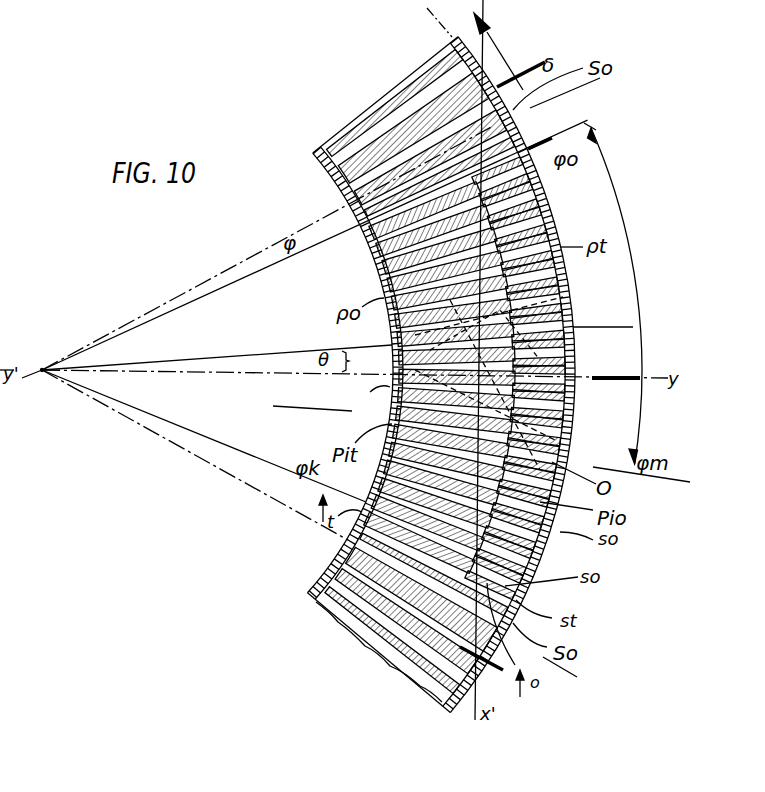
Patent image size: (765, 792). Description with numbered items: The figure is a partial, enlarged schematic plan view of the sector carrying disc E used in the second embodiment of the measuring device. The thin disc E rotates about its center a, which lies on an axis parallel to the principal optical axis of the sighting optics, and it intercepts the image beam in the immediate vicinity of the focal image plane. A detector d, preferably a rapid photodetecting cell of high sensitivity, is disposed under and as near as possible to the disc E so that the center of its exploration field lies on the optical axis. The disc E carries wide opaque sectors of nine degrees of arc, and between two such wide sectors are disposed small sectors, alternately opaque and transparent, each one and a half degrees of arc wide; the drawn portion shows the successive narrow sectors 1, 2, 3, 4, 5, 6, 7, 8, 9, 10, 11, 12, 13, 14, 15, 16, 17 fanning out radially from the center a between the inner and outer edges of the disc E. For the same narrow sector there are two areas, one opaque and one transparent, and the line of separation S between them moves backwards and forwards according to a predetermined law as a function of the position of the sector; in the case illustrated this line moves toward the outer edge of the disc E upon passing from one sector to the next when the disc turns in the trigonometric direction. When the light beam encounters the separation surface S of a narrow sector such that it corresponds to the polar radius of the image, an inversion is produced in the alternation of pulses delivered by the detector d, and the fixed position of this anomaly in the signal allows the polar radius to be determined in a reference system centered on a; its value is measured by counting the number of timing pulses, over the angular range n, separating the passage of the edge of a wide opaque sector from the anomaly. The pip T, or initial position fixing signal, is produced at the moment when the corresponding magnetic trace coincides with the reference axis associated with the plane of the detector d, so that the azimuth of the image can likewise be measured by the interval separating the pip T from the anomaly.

The narrow sector 1 is at (460, 198).
The narrow sector 2 is at (467, 220).
The narrow sector 3 is at (474, 242).
The narrow sector 4 is at (481, 264).
The narrow sector 5 is at (485, 286).
The narrow sector 6 is at (489, 308).
The narrow sector 7 is at (493, 331).
The narrow sector 8 is at (493, 355).
The narrow sector 9 is at (494, 377).
The narrow sector 10 is at (498, 400).
The narrow sector 11 is at (496, 423).
The narrow sector 12 is at (492, 446).
The narrow sector 13 is at (487, 469).
The narrow sector 14 is at (481, 492).
The narrow sector 15 is at (474, 513).
The narrow sector 16 is at (466, 539).
The narrow sector 17 is at (458, 561).
The disc E is at (417, 73).
The center of rotation a is at (39, 357).
The angular range n is at (619, 293).
The separation surface S is at (603, 315).
The position fixing pip T is at (616, 393).
The detector d is at (371, 398).